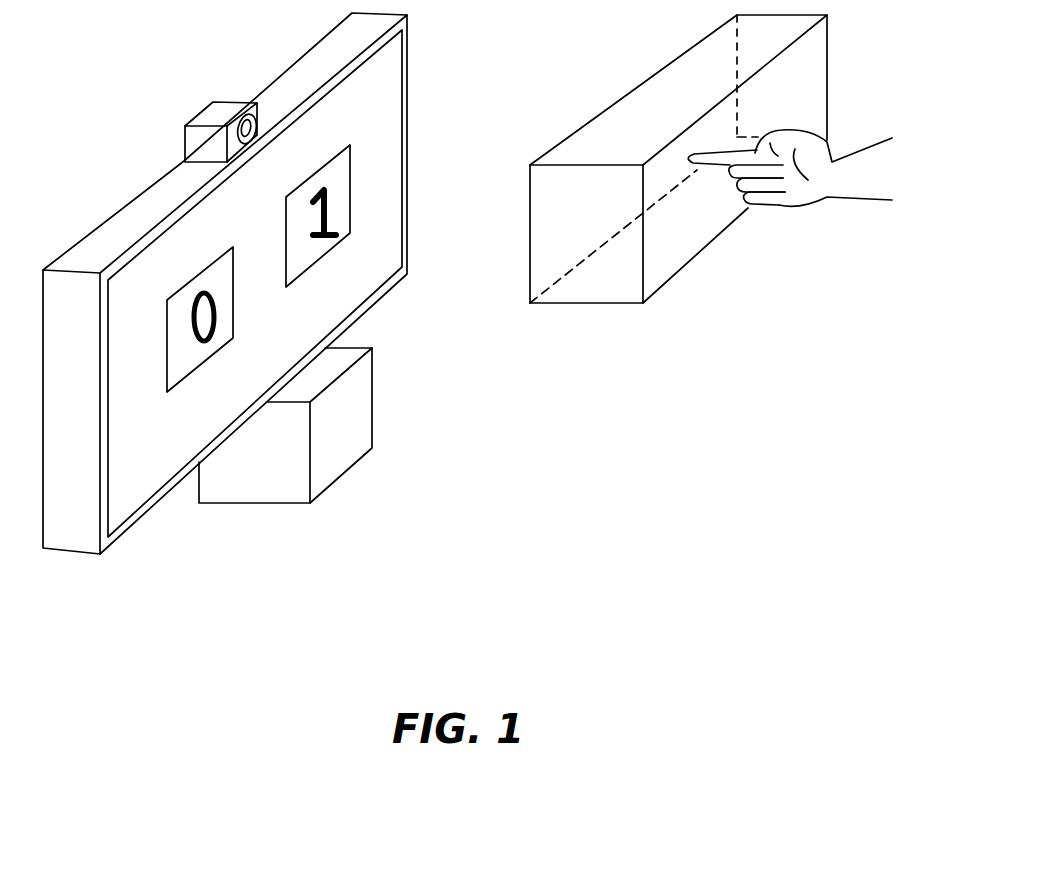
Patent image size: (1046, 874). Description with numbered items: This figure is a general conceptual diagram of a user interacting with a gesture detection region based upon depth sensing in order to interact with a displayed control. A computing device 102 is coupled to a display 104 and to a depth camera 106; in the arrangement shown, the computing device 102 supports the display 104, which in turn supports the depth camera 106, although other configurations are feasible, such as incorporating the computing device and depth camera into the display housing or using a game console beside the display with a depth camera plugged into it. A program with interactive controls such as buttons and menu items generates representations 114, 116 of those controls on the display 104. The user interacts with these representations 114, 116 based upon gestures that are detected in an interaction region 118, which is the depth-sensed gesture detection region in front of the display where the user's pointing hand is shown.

The computing device 102 is at (343, 428).
The display 104 is at (132, 488).
The depth camera 106 is at (212, 113).
The representation of a control 114 is at (218, 333).
The representation of a control 116 is at (338, 232).
The interaction region 118 is at (597, 290).